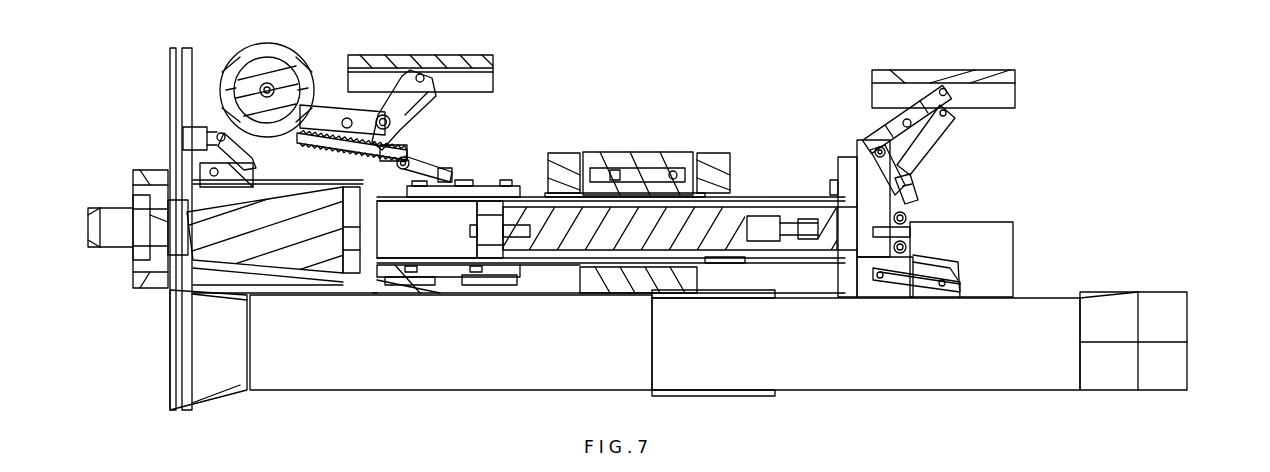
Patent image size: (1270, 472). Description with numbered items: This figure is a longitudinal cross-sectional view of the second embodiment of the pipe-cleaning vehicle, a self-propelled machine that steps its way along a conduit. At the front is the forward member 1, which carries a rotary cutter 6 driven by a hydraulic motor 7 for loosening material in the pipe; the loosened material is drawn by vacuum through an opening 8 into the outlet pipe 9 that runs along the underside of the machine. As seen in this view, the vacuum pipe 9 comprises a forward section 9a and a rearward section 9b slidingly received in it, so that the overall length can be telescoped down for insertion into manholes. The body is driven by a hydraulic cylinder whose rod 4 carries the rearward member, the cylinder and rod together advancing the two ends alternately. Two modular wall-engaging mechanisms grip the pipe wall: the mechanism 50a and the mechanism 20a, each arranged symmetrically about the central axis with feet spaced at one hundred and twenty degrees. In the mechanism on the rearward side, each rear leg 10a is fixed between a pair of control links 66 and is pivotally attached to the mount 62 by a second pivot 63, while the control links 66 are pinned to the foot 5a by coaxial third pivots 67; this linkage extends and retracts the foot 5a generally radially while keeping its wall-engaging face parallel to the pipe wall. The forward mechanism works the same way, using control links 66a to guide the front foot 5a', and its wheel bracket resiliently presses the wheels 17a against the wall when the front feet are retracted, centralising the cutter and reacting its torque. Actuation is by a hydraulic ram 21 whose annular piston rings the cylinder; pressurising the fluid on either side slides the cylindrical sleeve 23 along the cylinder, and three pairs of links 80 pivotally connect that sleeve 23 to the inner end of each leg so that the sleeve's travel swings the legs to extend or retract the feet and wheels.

The forward member 1 is at (518, 64).
The rod 4 is at (824, 166).
The foot 5a is at (961, 75).
The foot 5a' is at (420, 59).
The rotary cutter 6 is at (118, 108).
The hydraulic motor 7 is at (207, 287).
The opening 8 is at (180, 355).
The outlet pipe 9 is at (953, 401).
The forward section 9a is at (313, 390).
The rearward section 9b is at (1043, 390).
The rear leg 10a is at (883, 152).
The wheel 17a is at (290, 52).
The wall-engaging mechanism 20a is at (1057, 129).
The hydraulic ram 21 is at (496, 164).
The cylindrical sleeve 23 is at (478, 188).
The wall-engaging mechanism 50a is at (518, 124).
The mount 62 is at (918, 192).
The second pivot 63 is at (880, 148).
The control link 66 is at (418, 110).
The control link 66a is at (928, 135).
The third pivot 67 is at (953, 120).
The link 80 is at (425, 158).